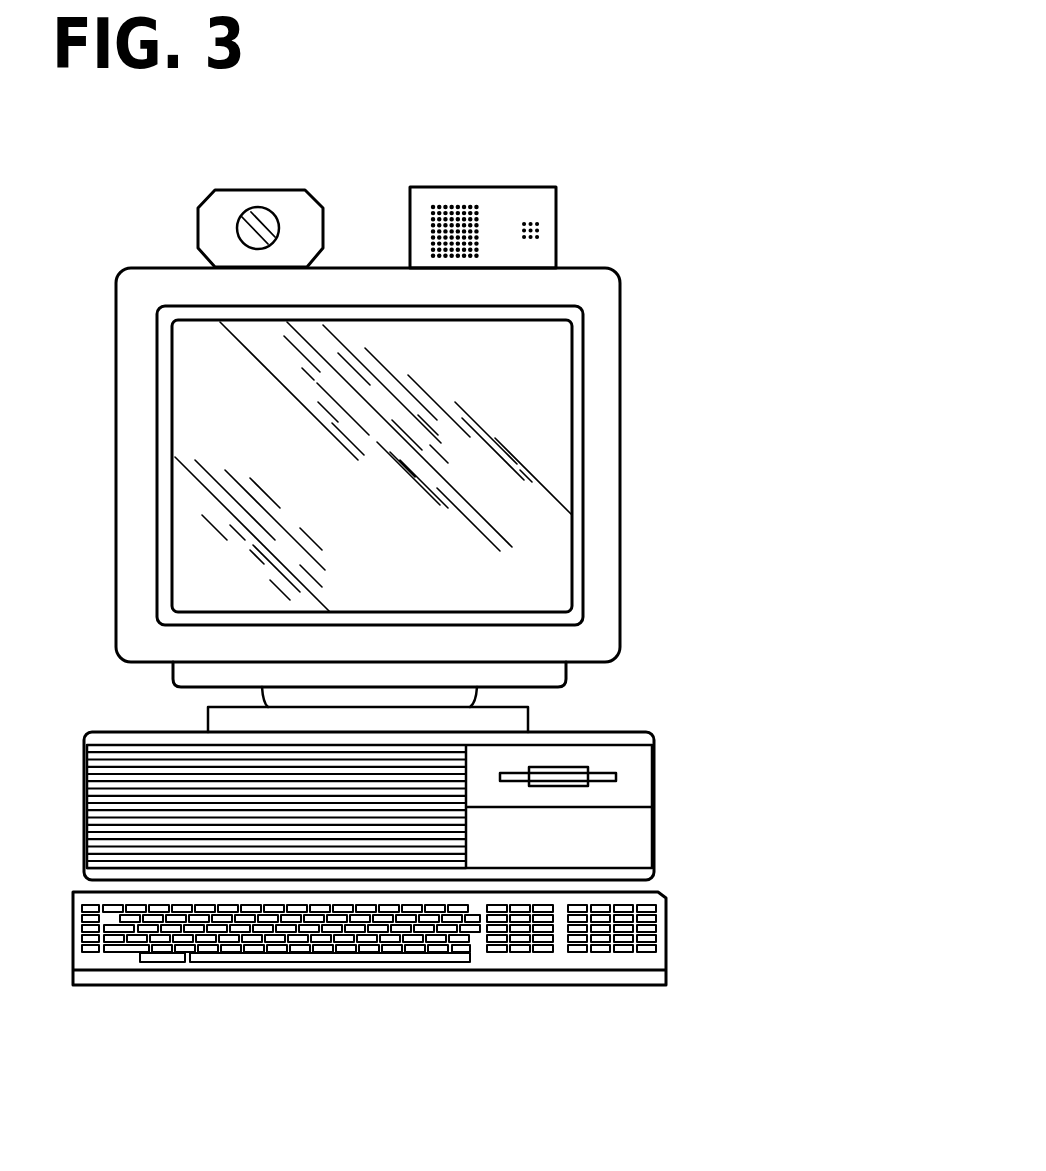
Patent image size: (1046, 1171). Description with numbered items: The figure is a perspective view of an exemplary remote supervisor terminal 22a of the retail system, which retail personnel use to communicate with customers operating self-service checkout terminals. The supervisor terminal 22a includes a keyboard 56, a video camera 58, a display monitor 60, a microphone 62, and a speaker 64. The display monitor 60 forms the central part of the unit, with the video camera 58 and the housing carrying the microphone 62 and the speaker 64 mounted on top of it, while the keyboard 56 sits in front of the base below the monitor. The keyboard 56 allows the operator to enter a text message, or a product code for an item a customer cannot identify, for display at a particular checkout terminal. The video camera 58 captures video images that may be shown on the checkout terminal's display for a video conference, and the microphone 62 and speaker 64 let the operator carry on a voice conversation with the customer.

The supervisor terminal 22a is at (633, 144).
The keyboard 56 is at (662, 893).
The video camera 58 is at (258, 188).
The display monitor 60 is at (213, 401).
The microphone 62 is at (541, 227).
The speaker 64 is at (452, 202).